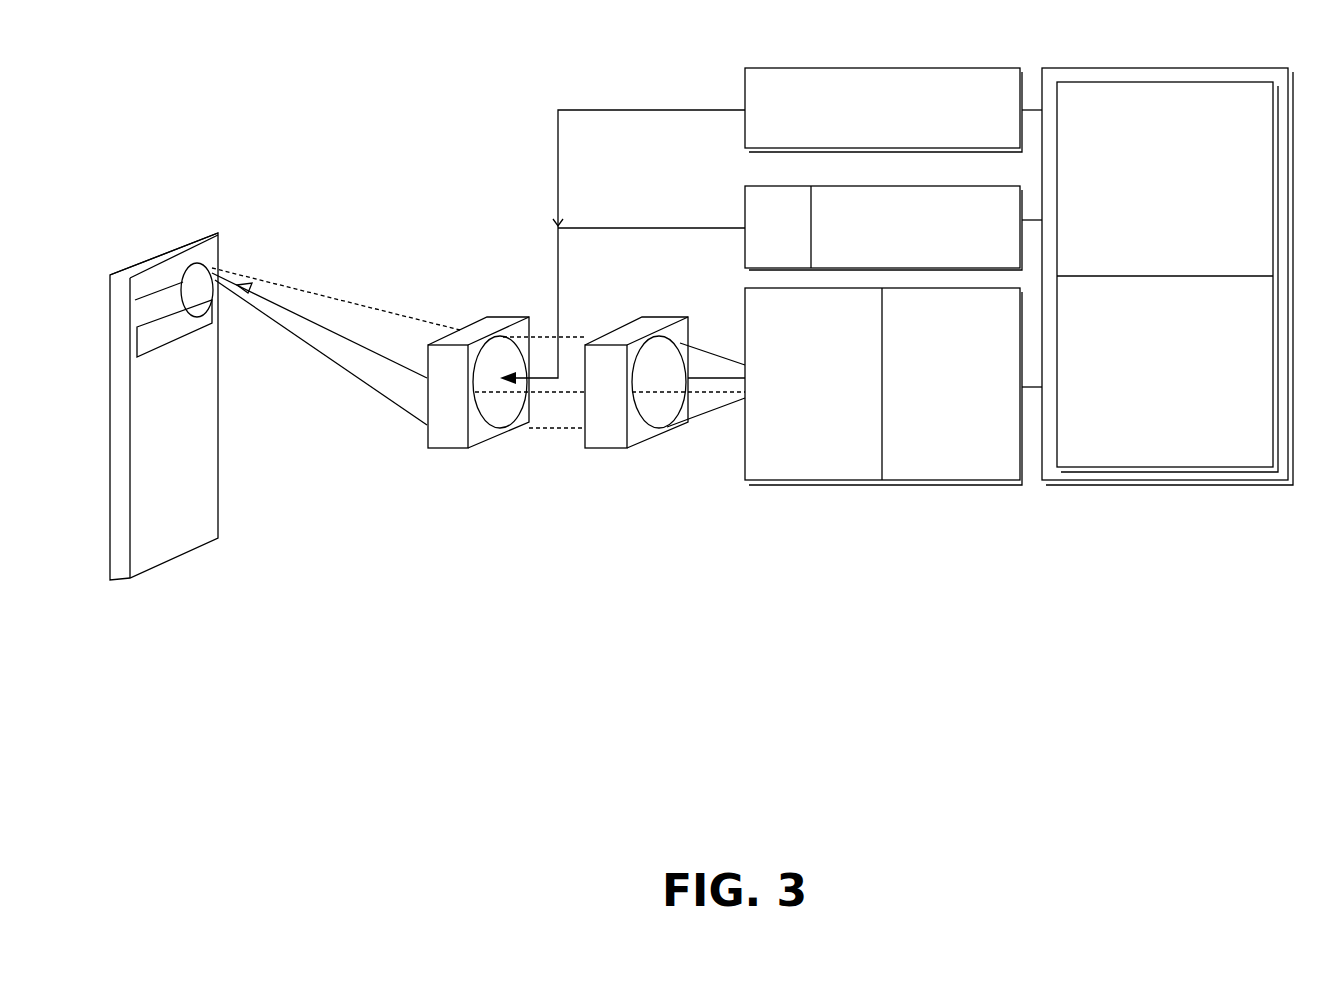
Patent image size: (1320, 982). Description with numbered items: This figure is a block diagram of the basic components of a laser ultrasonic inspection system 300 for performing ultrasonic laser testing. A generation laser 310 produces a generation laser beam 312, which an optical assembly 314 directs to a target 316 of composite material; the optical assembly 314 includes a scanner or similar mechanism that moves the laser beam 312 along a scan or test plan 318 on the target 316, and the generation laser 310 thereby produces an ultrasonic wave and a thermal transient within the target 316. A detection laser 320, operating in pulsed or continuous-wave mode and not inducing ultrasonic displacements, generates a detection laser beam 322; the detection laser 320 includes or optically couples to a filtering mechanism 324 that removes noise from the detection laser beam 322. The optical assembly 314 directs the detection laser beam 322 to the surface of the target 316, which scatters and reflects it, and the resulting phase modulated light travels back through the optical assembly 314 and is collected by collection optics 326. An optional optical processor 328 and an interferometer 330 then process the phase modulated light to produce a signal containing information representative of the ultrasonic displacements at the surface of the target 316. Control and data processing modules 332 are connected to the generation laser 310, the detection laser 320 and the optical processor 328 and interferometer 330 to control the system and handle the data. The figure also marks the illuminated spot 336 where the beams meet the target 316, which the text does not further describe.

The laser ultrasonic inspection system 300 is at (395, 187).
The generation laser 310 is at (880, 67).
The generation laser beam 312 is at (622, 230).
The optical assembly 314 is at (480, 325).
The target 316 is at (210, 545).
The scan or test plan 318 is at (180, 338).
The detection laser 320 is at (883, 228).
The detection laser beam 322 is at (745, 200).
The filtering mechanism 324 is at (651, 253).
The collection optics 326 is at (615, 440).
The optical processor 328 is at (818, 475).
The interferometer 330 is at (946, 475).
The control and data processing modules 332 is at (1232, 483).
The spot 336 is at (201, 264).